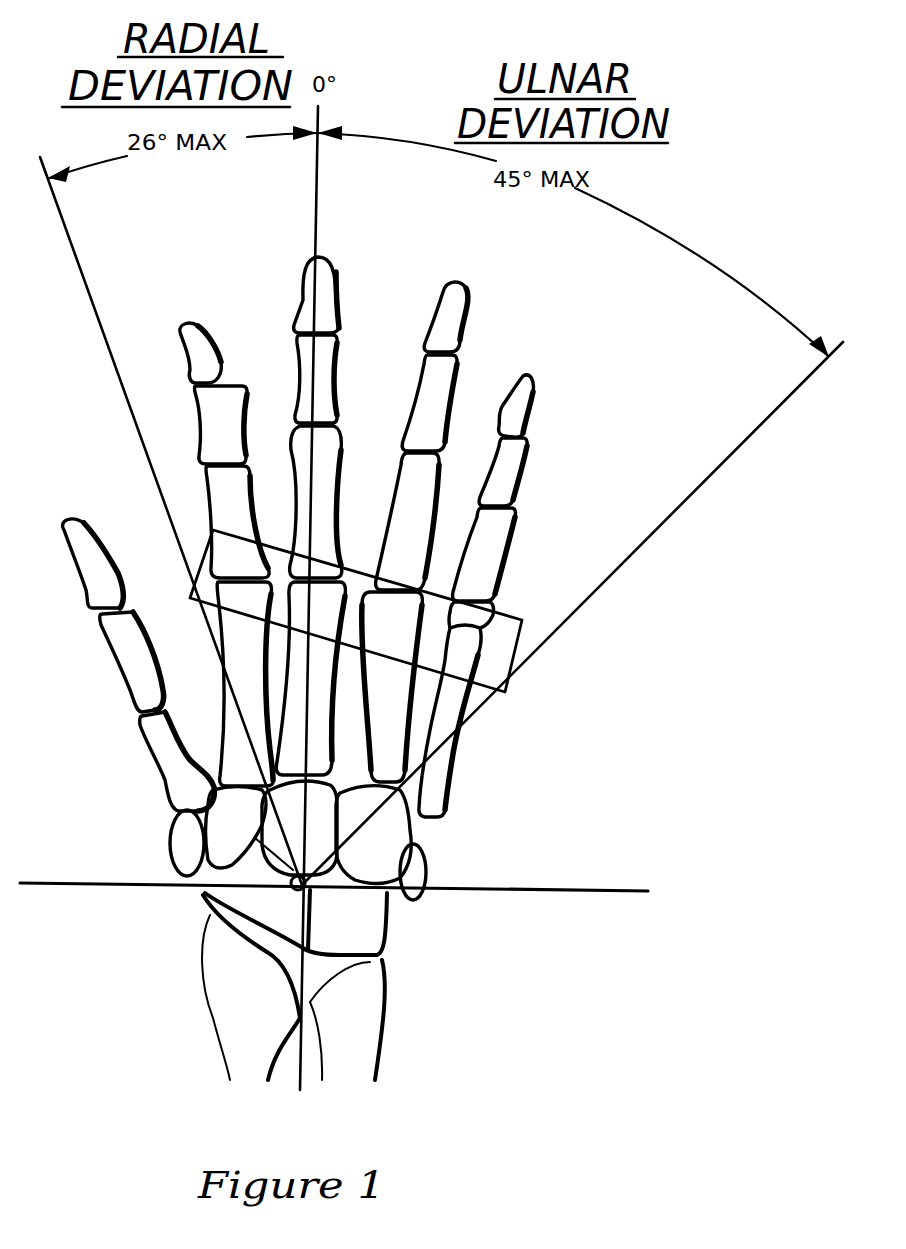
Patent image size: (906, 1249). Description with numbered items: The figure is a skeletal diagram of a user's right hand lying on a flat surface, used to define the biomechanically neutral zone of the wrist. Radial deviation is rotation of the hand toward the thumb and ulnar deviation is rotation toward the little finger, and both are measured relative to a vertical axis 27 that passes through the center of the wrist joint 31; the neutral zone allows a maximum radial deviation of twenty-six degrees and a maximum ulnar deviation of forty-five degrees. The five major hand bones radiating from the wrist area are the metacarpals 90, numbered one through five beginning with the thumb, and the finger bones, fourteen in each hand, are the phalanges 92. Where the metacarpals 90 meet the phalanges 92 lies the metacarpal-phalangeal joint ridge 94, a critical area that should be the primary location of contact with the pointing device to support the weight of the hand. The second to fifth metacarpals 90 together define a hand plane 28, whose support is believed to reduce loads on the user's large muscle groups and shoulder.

The vertical axis 27 is at (315, 197).
The metacarpals 90 is at (190, 788).
The phalanges 92 is at (203, 360).
The metacarpal-phalangeal joint ridge 94 is at (530, 651).
The hand plane 28 is at (455, 818).
The wrist joint 31 is at (335, 905).